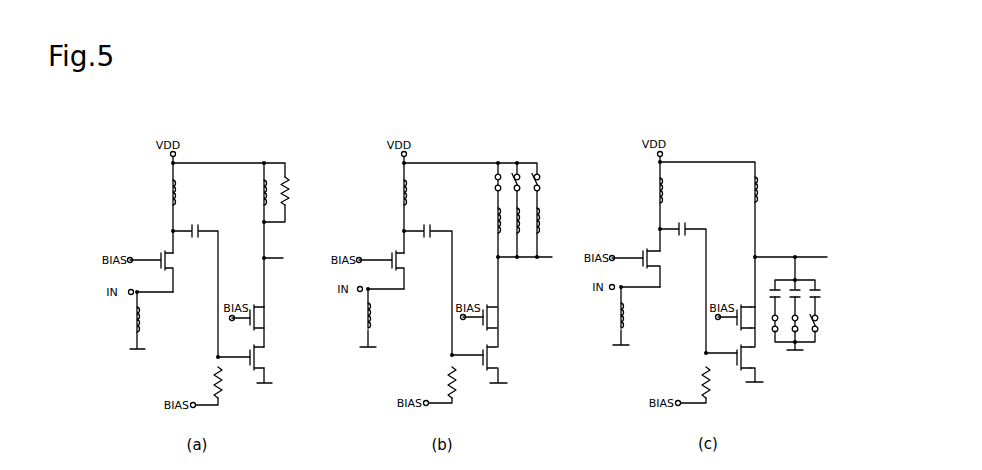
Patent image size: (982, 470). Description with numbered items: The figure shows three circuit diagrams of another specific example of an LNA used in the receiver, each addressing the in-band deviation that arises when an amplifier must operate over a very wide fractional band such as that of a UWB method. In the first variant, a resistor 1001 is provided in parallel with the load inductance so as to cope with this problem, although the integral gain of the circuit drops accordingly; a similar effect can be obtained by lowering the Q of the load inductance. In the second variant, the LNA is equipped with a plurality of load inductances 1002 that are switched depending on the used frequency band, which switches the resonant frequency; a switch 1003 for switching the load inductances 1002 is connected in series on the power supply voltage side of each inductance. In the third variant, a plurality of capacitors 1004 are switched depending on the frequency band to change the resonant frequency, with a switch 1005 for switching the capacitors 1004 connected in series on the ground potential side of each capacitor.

The resistor 1001 is at (289, 184).
The load inductances 1002 is at (492, 220).
The switch 1003 is at (495, 169).
The capacitors 1004 is at (824, 294).
The switch 1005 is at (822, 330).